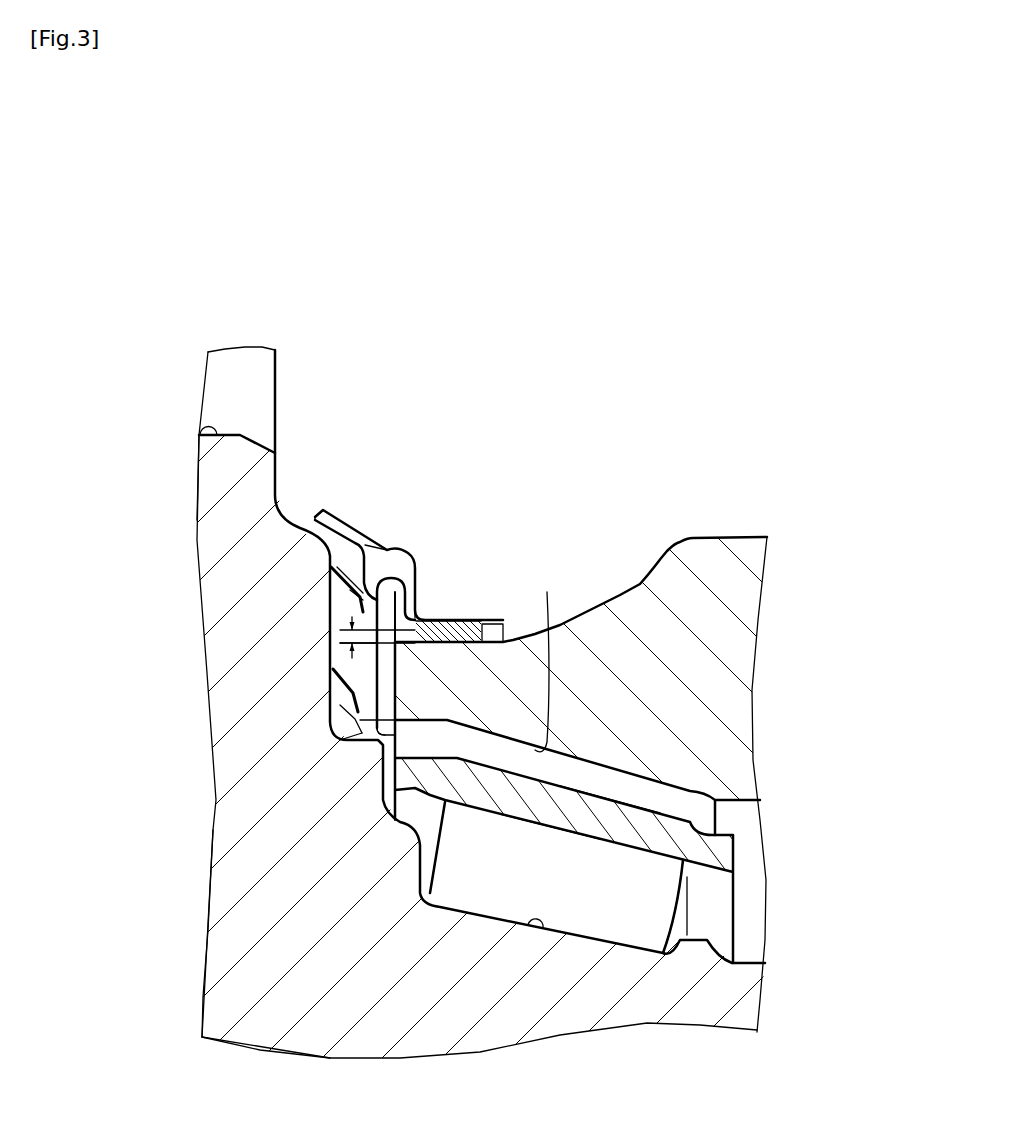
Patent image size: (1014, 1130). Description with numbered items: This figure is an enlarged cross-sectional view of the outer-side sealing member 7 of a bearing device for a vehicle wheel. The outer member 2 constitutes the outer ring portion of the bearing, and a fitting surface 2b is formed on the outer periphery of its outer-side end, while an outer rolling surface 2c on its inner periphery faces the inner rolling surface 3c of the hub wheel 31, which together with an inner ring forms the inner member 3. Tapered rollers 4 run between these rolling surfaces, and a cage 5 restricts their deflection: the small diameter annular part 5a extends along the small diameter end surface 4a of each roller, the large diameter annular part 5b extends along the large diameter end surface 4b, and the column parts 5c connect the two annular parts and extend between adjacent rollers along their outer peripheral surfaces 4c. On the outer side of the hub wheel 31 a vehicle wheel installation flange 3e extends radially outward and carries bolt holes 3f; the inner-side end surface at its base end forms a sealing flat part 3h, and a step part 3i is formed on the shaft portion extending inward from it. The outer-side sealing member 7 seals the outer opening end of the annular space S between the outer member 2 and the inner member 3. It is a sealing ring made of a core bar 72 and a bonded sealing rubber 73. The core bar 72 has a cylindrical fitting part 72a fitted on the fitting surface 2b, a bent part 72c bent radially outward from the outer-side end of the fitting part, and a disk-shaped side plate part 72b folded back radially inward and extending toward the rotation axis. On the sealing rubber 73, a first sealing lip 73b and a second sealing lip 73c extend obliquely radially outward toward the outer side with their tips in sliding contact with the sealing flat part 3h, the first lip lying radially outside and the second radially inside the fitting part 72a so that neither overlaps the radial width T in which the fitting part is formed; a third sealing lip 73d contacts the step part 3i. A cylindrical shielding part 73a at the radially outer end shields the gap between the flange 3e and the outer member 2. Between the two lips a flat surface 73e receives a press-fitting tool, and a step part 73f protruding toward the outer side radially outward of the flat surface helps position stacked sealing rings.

The outer member 2 is at (680, 522).
The fitting surface 2b is at (483, 621).
The outer rolling surface 2c is at (548, 661).
The inner member 3 is at (193, 855).
The hub wheel 31 is at (223, 942).
The inner rolling surface 3c is at (540, 930).
The vehicle wheel installation flange 3e is at (207, 473).
The bolt hole 3f is at (199, 430).
The sealing flat part 3h is at (348, 714).
The step part 3i is at (385, 731).
The tapered roller 4 is at (482, 875).
The small diameter end surface 4a is at (678, 912).
The large diameter end surface 4b is at (443, 818).
The outer peripheral surface 4c is at (545, 884).
The cage 5 is at (598, 868).
The small diameter annular part 5a is at (723, 915).
The large diameter annular part 5b is at (428, 832).
The column part 5c is at (610, 803).
The outer-side sealing member 7 is at (440, 526).
The core bar 72 is at (412, 585).
The fitting part 72a is at (435, 632).
The side plate part 72b is at (362, 734).
The bent part 72c is at (418, 612).
The sealing rubber 73 is at (388, 549).
The shielding part 73a is at (330, 524).
The first sealing lip 73b is at (330, 565).
The second sealing lip 73c is at (333, 674).
The third sealing lip 73d is at (345, 747).
The flat surface 73e is at (350, 641).
The step part 73f is at (360, 598).
The annular space S is at (748, 862).
The radial width T is at (373, 634).